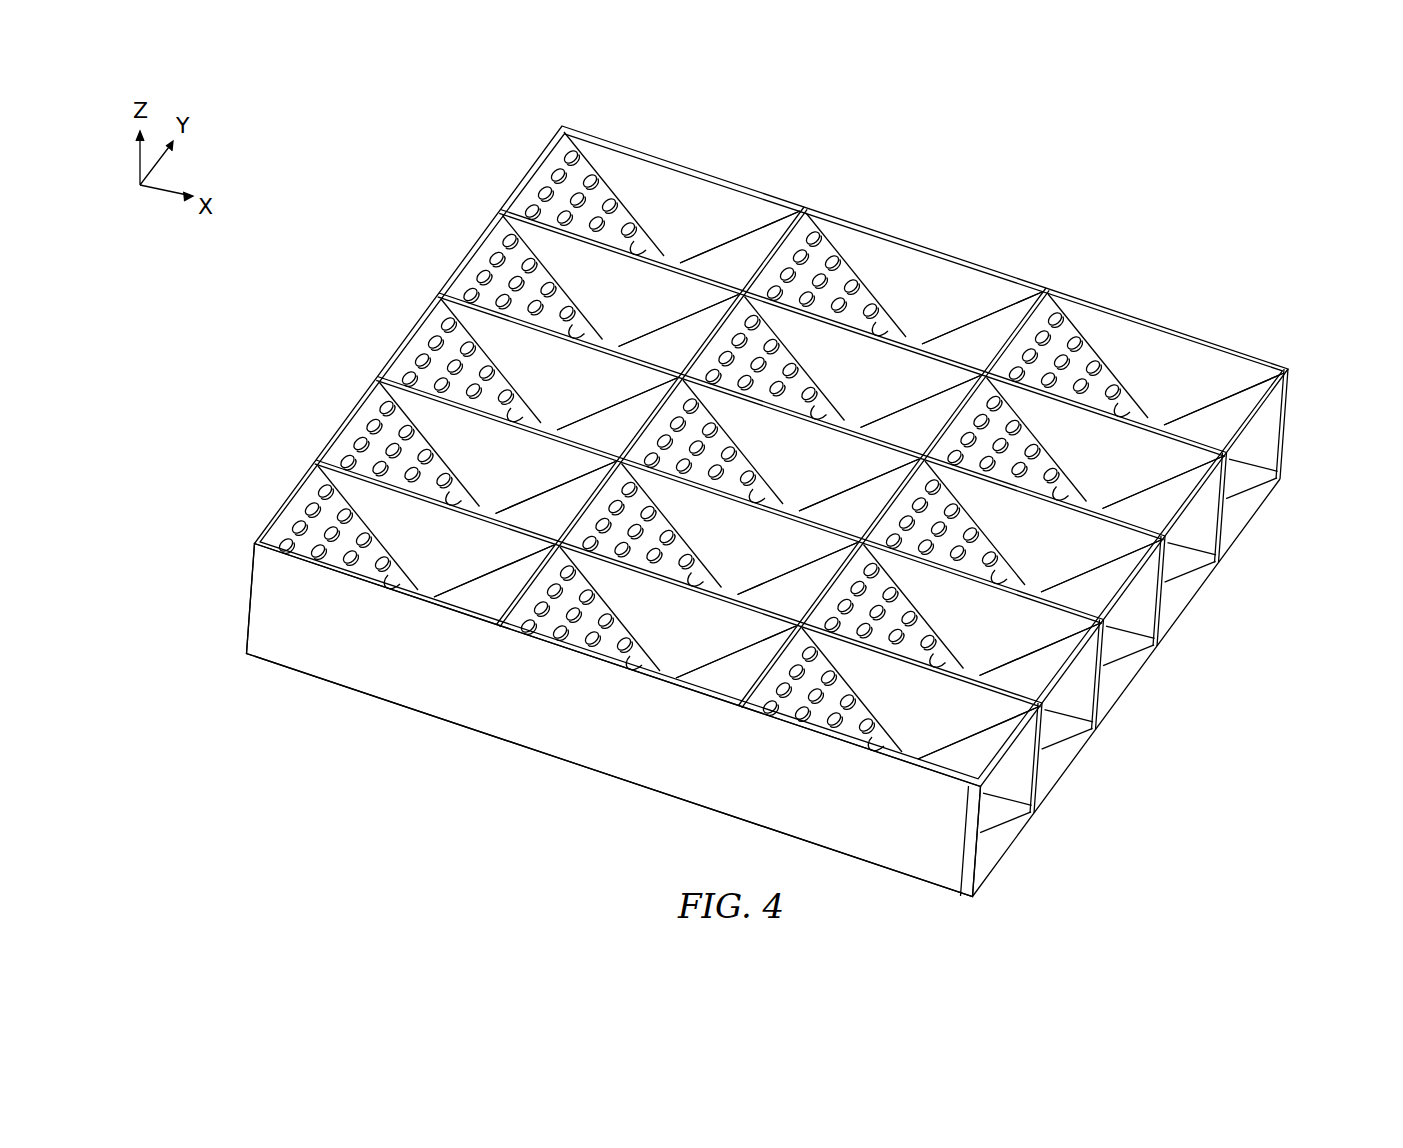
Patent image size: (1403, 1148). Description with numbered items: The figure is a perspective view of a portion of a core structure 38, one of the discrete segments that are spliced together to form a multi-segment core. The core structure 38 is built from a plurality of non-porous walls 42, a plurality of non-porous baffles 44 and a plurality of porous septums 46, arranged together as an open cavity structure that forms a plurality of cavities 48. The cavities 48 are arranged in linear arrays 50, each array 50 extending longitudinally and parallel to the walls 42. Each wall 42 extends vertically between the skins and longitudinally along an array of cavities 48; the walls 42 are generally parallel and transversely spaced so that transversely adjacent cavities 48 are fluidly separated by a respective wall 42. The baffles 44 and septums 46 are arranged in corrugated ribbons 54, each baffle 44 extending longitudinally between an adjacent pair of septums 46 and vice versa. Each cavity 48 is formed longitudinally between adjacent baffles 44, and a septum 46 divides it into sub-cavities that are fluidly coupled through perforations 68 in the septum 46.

The core structure 38 is at (1193, 238).
The non-porous wall 42 is at (1240, 352).
The non-porous baffle 44 is at (745, 240).
The porous septum 46 is at (590, 150).
The cavity 48 is at (672, 197).
The linear array 50 is at (490, 151).
The corrugated ribbon 54 is at (1245, 400).
The perforation 68 is at (530, 630).